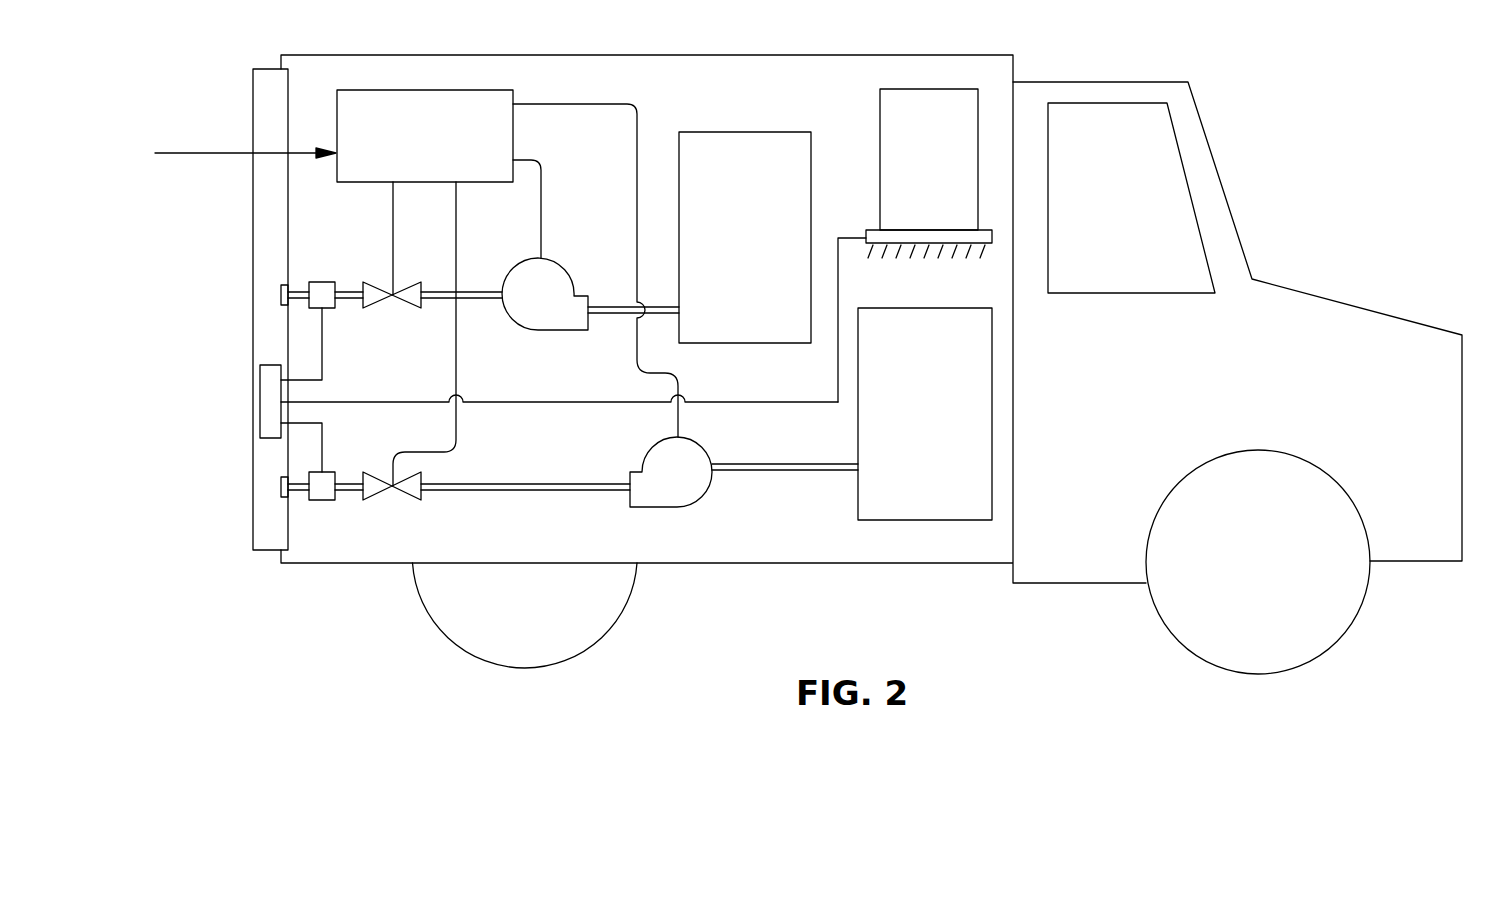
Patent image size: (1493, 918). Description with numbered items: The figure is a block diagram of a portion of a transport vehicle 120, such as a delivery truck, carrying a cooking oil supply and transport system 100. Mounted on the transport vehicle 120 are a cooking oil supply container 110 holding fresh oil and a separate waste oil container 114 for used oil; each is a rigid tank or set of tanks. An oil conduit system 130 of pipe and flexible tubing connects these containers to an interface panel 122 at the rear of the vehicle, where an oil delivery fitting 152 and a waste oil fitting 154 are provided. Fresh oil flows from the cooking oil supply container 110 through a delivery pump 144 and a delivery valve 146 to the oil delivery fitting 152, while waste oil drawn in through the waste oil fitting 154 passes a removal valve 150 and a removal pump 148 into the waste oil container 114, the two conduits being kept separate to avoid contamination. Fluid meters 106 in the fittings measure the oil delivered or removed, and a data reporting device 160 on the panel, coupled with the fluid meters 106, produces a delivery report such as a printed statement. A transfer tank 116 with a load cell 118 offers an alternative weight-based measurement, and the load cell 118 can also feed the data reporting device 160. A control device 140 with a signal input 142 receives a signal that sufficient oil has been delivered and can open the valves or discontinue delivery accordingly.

The cooking oil supply and transport system 100 is at (666, 80).
The fluid meters 106 is at (323, 282).
The cooking oil supply container 110 is at (907, 427).
The waste oil container 114 is at (722, 241).
The transfer tank 116 is at (905, 171).
The load cell 118 is at (866, 234).
The transport vehicle 120 is at (1309, 289).
The interface panel 122 is at (253, 95).
The oil conduit system 130 is at (545, 482).
The control device 140 is at (397, 147).
The signal input 142 is at (185, 154).
The delivery pump 144 is at (702, 450).
The delivery valve 146 is at (395, 497).
The removal pump 148 is at (565, 265).
The removal valve 150 is at (397, 305).
The oil delivery fitting 152 is at (281, 487).
The waste oil fitting 154 is at (281, 293).
The data reporting device 160 is at (260, 400).